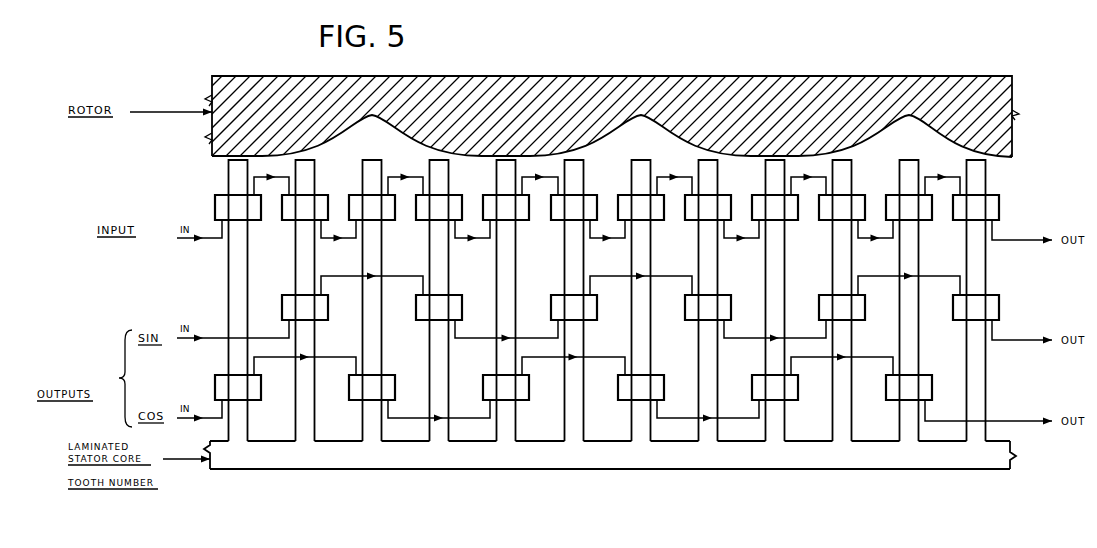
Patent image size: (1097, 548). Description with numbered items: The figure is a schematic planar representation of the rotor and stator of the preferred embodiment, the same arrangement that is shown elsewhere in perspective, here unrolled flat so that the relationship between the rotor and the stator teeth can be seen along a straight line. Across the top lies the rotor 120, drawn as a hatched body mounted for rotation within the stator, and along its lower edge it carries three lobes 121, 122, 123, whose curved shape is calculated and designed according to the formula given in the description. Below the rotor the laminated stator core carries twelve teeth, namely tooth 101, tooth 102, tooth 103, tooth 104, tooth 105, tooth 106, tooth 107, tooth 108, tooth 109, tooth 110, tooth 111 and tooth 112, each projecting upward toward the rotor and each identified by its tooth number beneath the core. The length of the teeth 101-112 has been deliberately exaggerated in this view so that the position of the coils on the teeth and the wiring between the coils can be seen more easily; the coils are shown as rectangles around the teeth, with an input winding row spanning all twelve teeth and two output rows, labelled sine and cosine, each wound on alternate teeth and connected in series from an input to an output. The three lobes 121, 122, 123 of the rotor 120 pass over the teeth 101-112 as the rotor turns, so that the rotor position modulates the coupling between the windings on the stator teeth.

The rotor 120 is at (237, 95).
The lobe 121 is at (338, 136).
The lobe 122 is at (606, 136).
The lobe 123 is at (874, 136).
The tooth 101 is at (238, 326).
The tooth 102 is at (305, 326).
The tooth 103 is at (372, 326).
The tooth 104 is at (439, 326).
The tooth 105 is at (506, 326).
The tooth 106 is at (574, 326).
The tooth 107 is at (641, 326).
The tooth 108 is at (708, 326).
The tooth 109 is at (775, 326).
The tooth 110 is at (842, 326).
The tooth 111 is at (909, 326).
The tooth 112 is at (976, 326).